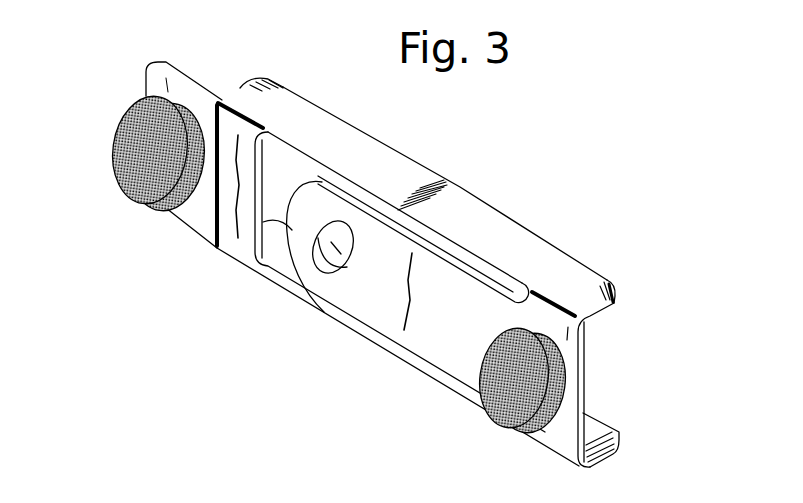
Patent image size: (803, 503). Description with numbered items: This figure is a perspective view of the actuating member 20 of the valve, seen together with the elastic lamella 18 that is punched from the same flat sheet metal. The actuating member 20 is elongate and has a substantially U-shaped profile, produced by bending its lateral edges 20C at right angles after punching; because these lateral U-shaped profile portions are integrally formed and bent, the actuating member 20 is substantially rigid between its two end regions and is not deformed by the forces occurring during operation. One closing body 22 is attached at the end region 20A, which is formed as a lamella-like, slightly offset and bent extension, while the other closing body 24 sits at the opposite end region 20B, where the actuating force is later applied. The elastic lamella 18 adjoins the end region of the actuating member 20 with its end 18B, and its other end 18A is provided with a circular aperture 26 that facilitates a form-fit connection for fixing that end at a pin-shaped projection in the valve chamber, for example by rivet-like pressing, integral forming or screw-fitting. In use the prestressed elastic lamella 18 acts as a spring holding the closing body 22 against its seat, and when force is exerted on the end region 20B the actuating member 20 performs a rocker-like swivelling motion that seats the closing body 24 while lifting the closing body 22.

The elastic lamella 18 is at (412, 328).
The end of elastic lamella 18A is at (316, 195).
The other end of elastic lamella 18B is at (483, 303).
The actuating member 20 is at (480, 198).
The end region of actuating member 20A is at (165, 63).
The other end region of actuating member 20B is at (572, 343).
The lateral edges 20C is at (373, 157).
The closing body 22 is at (120, 152).
The closing body 24 is at (500, 416).
The circular aperture 26 is at (327, 272).